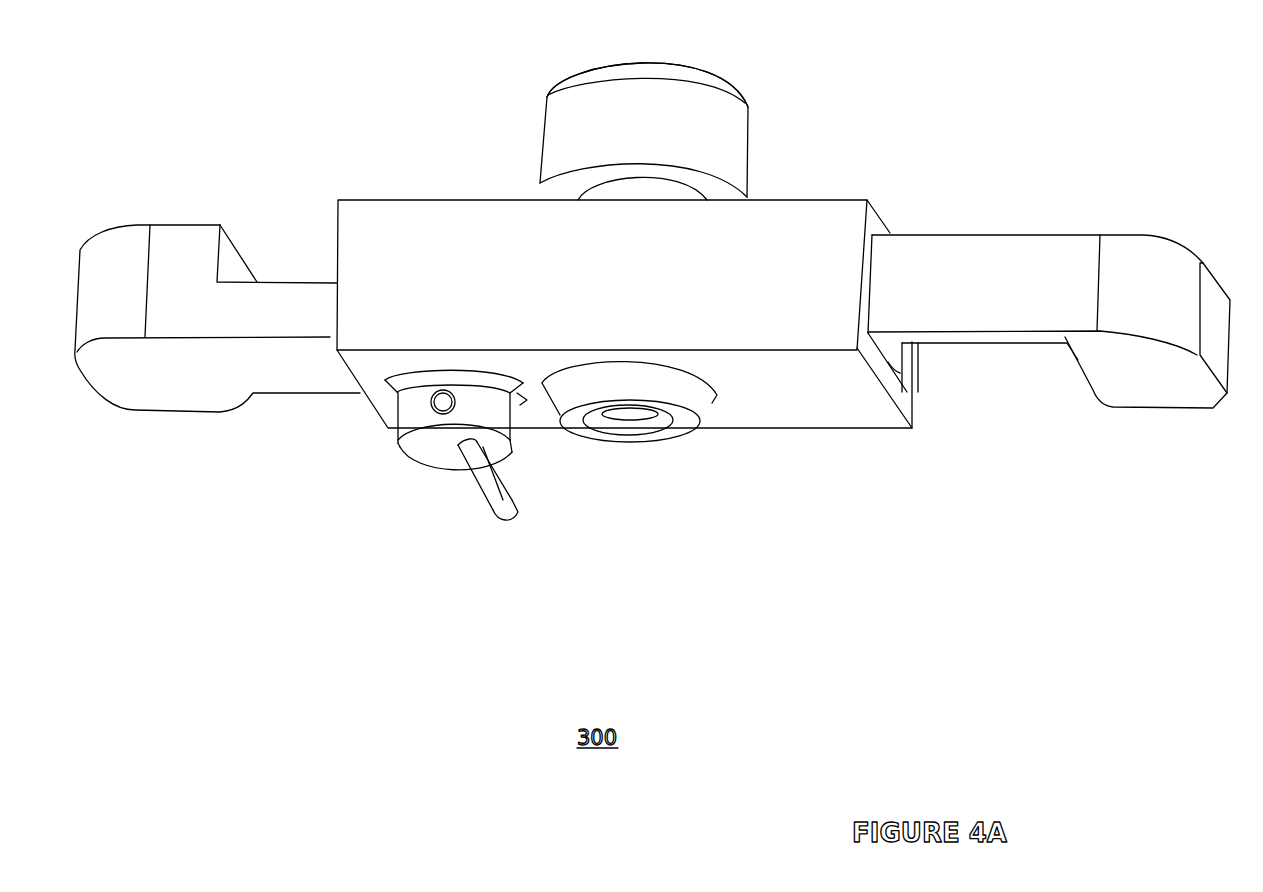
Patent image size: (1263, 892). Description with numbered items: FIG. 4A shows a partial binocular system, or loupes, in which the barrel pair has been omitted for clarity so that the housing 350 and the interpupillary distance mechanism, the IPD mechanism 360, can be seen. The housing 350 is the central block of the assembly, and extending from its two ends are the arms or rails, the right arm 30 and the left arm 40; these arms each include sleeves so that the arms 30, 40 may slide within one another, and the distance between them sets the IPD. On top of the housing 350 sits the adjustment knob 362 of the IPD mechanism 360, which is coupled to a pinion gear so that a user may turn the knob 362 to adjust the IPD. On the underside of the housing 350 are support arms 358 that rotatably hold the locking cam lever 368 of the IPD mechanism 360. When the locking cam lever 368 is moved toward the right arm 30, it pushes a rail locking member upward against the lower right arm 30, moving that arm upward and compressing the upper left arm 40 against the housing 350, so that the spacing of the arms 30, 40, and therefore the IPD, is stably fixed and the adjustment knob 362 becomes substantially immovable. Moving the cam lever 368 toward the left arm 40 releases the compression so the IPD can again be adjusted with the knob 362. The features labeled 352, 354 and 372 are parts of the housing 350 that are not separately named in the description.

The right arm 30 is at (132, 225).
The left arm 40 is at (1165, 410).
The housing 350 is at (438, 193).
The slot 352 is at (815, 200).
The bottom face 354 is at (853, 430).
The support arms 358 is at (405, 462).
The IPD mechanism 360 is at (558, 43).
The knob 362 is at (697, 60).
The locking cam lever 368 is at (488, 507).
The boss ring 372 is at (623, 420).